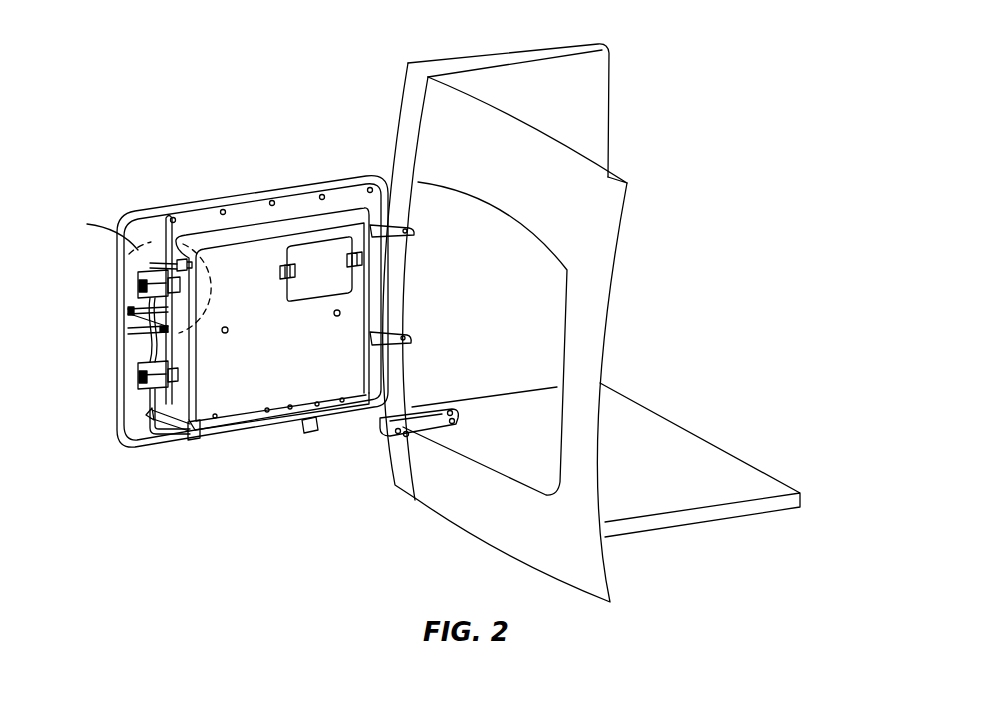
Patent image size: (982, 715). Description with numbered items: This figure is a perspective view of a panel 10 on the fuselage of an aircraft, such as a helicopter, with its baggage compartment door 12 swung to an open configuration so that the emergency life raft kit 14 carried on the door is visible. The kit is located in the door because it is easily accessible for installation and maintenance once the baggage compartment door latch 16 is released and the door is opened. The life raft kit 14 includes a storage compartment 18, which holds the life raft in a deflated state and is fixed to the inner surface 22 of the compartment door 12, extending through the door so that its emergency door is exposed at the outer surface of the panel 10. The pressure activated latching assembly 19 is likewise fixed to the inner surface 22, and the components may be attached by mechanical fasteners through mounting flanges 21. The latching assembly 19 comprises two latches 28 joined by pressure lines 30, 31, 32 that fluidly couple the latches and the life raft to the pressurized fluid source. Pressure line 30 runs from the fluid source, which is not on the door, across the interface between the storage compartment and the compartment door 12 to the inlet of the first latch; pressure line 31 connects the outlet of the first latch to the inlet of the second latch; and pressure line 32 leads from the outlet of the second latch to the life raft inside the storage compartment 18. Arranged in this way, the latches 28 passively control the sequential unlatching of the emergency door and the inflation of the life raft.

The panel 10 is at (272, 75).
The baggage compartment door 12 is at (189, 139).
The emergency life raft kit 14 is at (219, 386).
The baggage compartment door latch 16 is at (130, 318).
The storage compartment 18 is at (247, 230).
The pressure activated latching assembly 19 is at (139, 352).
The mounting flanges 21 is at (290, 203).
The inner surface 22 is at (138, 437).
The latches 28 is at (140, 290).
The pressure line 30 is at (417, 435).
The pressure line 31 is at (137, 340).
The pressure line 32 is at (163, 260).